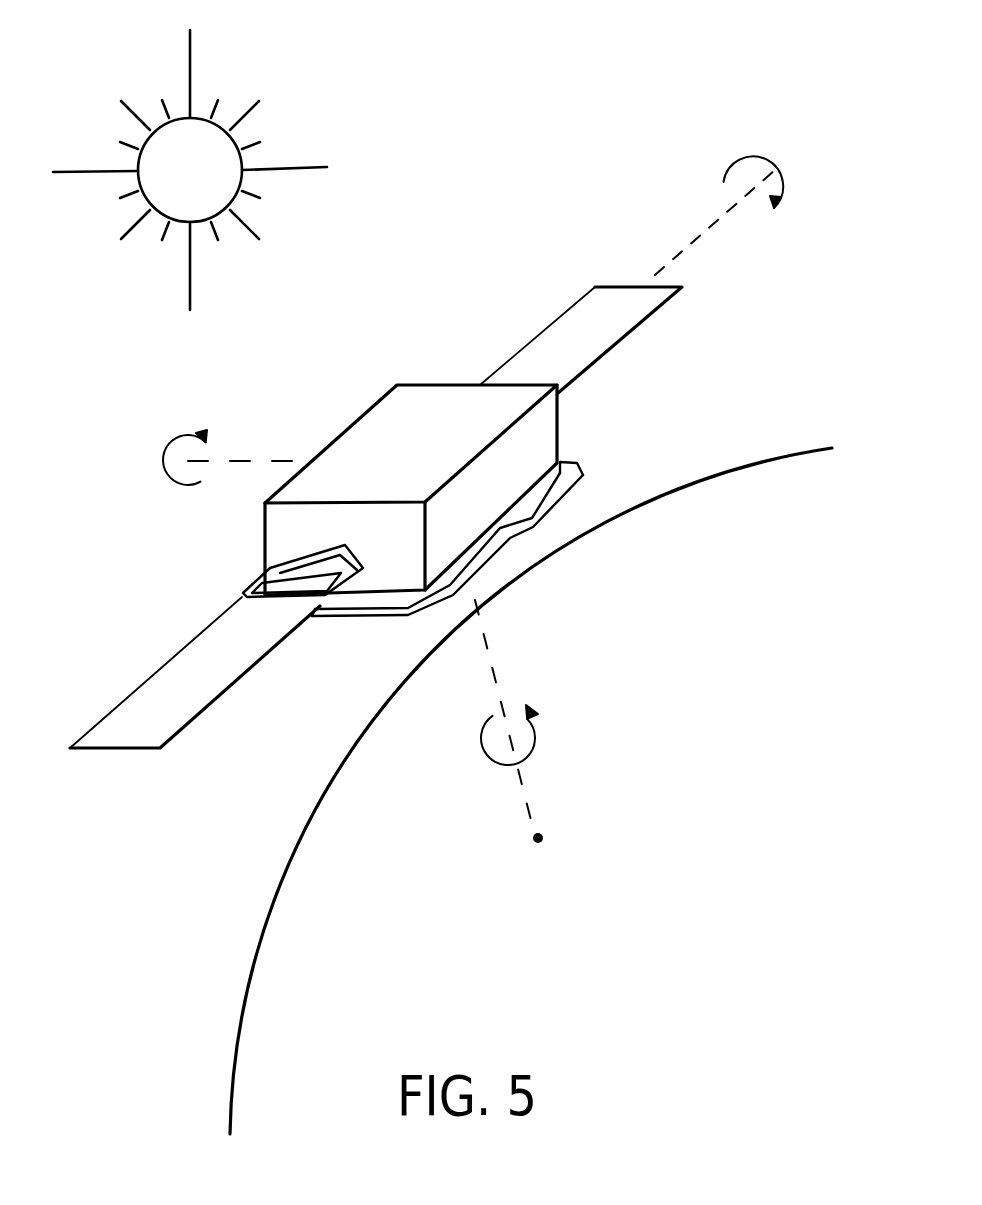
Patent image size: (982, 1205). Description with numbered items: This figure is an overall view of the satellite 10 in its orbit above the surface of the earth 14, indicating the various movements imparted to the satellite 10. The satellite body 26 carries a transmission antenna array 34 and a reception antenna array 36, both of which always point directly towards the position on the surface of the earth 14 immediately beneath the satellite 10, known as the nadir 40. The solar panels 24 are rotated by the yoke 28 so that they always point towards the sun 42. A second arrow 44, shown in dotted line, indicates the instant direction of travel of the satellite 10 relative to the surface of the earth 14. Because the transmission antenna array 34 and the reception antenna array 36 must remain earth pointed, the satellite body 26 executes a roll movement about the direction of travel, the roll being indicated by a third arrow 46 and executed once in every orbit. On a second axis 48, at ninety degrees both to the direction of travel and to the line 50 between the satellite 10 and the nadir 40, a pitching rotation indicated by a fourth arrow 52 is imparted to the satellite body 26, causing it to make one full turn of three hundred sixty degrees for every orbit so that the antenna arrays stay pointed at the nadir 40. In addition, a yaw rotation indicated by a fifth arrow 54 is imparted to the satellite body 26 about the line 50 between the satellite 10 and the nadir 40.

The satellite 10 is at (457, 448).
The surface of the earth 14 is at (760, 460).
The solar panels 24 is at (187, 702).
The satellite body 26 is at (558, 420).
The yoke 28 is at (242, 595).
The transmission antenna array 34 is at (563, 467).
The reception antenna array 36 is at (481, 537).
The nadir 40 is at (543, 840).
The sun 42 is at (243, 176).
The second arrow 44 is at (787, 157).
The third arrow 46 is at (728, 168).
The second axis 48 is at (277, 458).
The line 50 is at (488, 643).
The fourth arrow 52 is at (168, 443).
The fifth arrow 54 is at (537, 742).